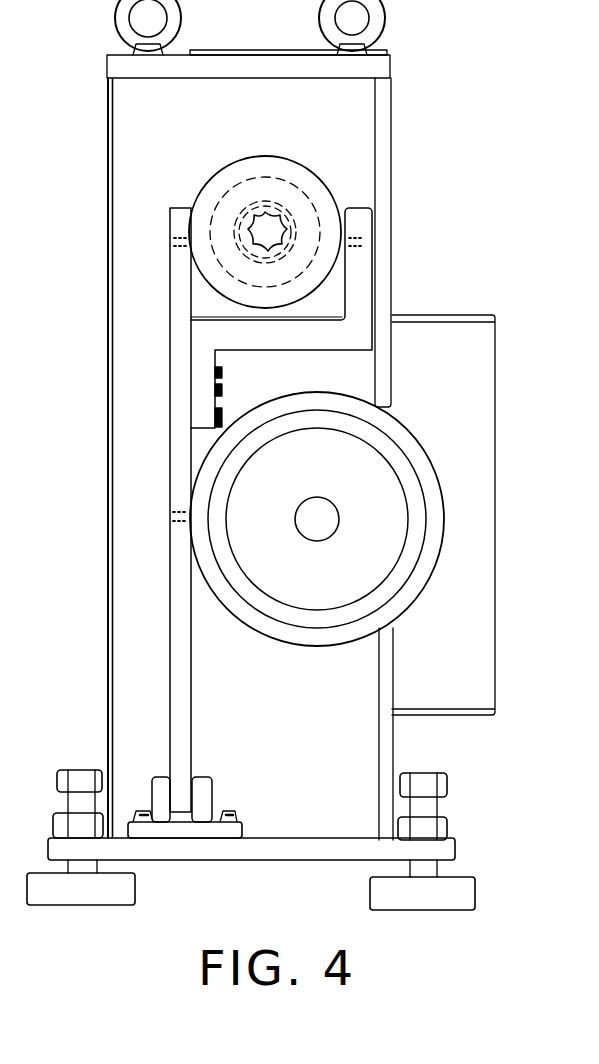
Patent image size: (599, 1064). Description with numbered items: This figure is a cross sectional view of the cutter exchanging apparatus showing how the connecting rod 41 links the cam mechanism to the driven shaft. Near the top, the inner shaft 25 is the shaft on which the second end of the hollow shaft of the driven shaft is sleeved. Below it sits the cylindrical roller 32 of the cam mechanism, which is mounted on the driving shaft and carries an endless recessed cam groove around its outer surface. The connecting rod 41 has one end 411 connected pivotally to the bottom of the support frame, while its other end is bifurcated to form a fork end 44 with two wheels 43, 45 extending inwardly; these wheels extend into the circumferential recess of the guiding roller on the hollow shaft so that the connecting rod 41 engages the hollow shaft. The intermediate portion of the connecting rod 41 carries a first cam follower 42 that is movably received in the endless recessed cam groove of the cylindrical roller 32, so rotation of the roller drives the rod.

The inner shaft 25 is at (253, 215).
The cylindrical roller 32 is at (252, 490).
The connecting rod 41 is at (172, 403).
The first cam follower 42 is at (207, 523).
The wheel 43 is at (190, 245).
The fork end 44 is at (210, 346).
The wheel 45 is at (352, 220).
The end of connecting rod 411 is at (150, 797).